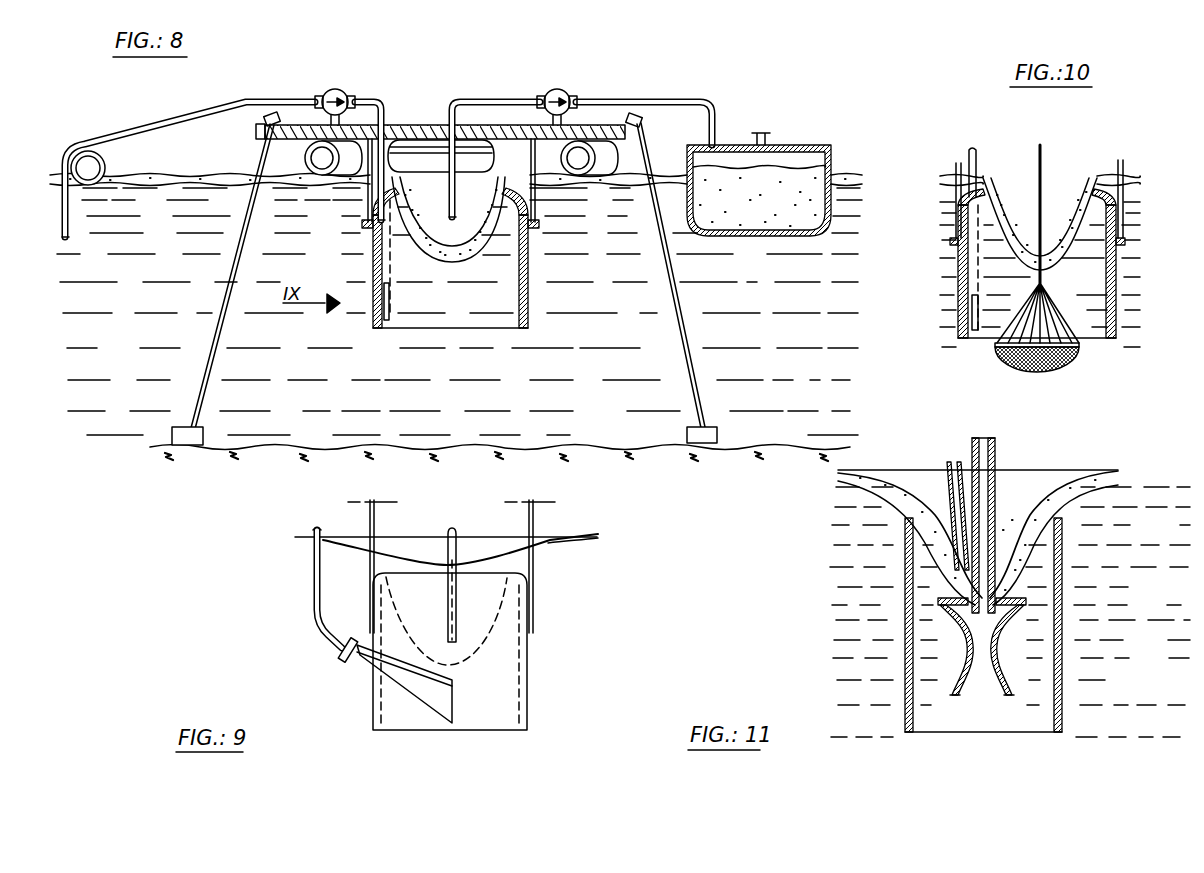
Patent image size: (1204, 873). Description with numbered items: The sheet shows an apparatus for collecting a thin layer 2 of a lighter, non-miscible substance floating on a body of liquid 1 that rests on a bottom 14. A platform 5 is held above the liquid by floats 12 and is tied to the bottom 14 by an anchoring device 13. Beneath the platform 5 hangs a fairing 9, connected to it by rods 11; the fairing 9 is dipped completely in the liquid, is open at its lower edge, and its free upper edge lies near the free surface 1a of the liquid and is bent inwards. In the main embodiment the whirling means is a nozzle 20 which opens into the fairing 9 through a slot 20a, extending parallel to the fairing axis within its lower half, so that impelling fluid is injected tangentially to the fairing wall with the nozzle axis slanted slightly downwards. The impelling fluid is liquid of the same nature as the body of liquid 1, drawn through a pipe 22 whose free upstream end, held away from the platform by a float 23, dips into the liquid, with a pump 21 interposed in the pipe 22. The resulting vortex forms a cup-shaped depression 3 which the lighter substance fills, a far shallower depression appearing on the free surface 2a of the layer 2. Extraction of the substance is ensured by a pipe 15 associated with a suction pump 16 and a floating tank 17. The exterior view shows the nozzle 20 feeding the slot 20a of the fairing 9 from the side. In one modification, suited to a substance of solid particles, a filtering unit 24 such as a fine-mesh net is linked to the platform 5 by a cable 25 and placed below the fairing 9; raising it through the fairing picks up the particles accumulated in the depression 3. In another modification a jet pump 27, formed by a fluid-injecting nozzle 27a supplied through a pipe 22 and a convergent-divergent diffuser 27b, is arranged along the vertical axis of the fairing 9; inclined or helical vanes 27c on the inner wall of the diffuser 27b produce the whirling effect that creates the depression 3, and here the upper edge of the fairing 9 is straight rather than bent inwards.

In FIG. 8, the body of liquid 1 is at (813, 344).
In FIG. 10, the body of liquid 1 is at (1091, 286).
In FIG. 11, the body of liquid 1 is at (863, 646).
In FIG. 8, the free surface of the body of liquid 1a is at (172, 185).
In FIG. 9, the free surface of the body of liquid 1a is at (597, 542).
In FIG. 11, the free surface of the body of liquid 1a is at (1108, 488).
In FIG. 8, the thin layer of substance 2 is at (848, 173).
In FIG. 10, the thin layer of substance 2 is at (1015, 207).
In FIG. 11, the thin layer of substance 2 is at (1065, 488).
In FIG. 8, the free surface of the thin layer 2a is at (222, 174).
In FIG. 9, the free surface of the thin layer 2a is at (598, 532).
In FIG. 11, the free surface of the thin layer 2a is at (1107, 472).
In FIG. 8, the depression 3 is at (469, 244).
In FIG. 10, the depression 3 is at (1060, 233).
In FIG. 11, the depression 3 is at (1018, 549).
In FIG. 8, the platform 5 is at (415, 126).
In FIG. 8, the fairing 9 is at (533, 272).
In FIG. 9, the fairing 9 is at (507, 672).
In FIG. 10, the fairing 9 is at (1117, 280).
In FIG. 11, the fairing 9 is at (1061, 627).
In FIG. 8, the rods 11 is at (363, 202).
In FIG. 9, the rods 11 is at (373, 515).
In FIG. 10, the rods 11 is at (1123, 167).
In FIG. 8, the floats 12 is at (304, 142).
In FIG. 8, the anchoring device 13 is at (233, 285).
In FIG. 8, the bottom 14 is at (610, 442).
In FIG. 8, the pipe 15 is at (500, 99).
In FIG. 9, the pipe 15 is at (456, 533).
In FIG. 11, the pipe 15 is at (953, 462).
In FIG. 8, the suction pump 16 is at (558, 89).
In FIG. 8, the floating tank 17 is at (800, 145).
In FIG. 9, the nozzle 20 is at (422, 688).
In FIG. 8, the slot 20a is at (388, 302).
In FIG. 10, the slot 20a is at (978, 323).
In FIG. 8, the pump 21 is at (334, 89).
In FIG. 8, the pipe 22 is at (180, 118).
In FIG. 9, the pipe 22 is at (320, 532).
In FIG. 10, the pipe 22 is at (976, 149).
In FIG. 11, the pipe 22 is at (995, 450).
In FIG. 8, the float 23 is at (108, 165).
In FIG. 10, the filtering unit 24 is at (1068, 362).
In FIG. 10, the cable 25 is at (1043, 165).
In FIG. 11, the jet pump 27 is at (1001, 669).
In FIG. 11, the fluid-injecting nozzle 27a is at (972, 601).
In FIG. 11, the diffuser 27b is at (1007, 638).
In FIG. 11, the vanes 27c is at (993, 673).